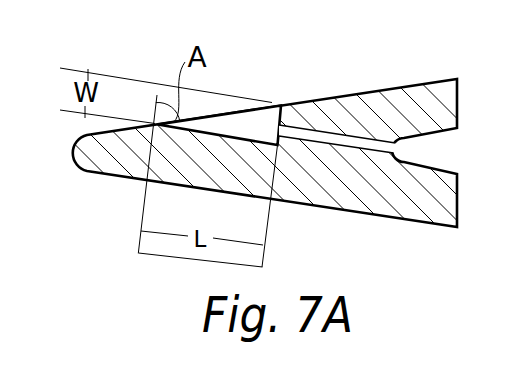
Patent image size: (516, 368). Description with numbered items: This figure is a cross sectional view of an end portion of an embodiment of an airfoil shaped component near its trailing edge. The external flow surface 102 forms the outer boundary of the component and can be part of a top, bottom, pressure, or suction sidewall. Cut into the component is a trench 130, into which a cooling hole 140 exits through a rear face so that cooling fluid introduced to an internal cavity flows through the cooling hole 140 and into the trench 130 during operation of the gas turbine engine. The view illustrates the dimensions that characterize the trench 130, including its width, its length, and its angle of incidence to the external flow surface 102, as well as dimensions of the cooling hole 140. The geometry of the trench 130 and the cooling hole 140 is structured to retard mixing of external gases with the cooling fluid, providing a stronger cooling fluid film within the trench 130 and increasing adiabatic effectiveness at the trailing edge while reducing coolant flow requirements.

The external flow surface 102 is at (320, 98).
The trench 130 is at (252, 122).
The cooling hole 140 is at (382, 138).